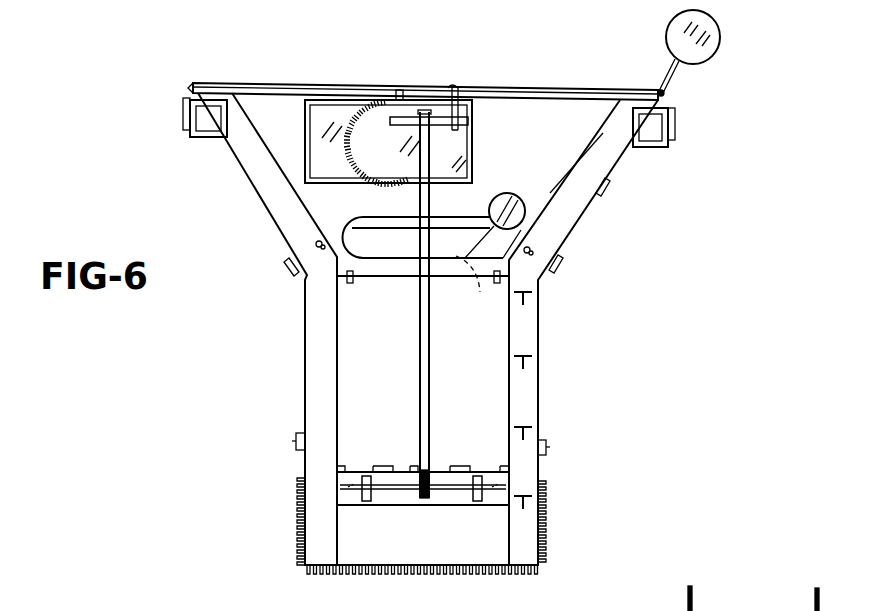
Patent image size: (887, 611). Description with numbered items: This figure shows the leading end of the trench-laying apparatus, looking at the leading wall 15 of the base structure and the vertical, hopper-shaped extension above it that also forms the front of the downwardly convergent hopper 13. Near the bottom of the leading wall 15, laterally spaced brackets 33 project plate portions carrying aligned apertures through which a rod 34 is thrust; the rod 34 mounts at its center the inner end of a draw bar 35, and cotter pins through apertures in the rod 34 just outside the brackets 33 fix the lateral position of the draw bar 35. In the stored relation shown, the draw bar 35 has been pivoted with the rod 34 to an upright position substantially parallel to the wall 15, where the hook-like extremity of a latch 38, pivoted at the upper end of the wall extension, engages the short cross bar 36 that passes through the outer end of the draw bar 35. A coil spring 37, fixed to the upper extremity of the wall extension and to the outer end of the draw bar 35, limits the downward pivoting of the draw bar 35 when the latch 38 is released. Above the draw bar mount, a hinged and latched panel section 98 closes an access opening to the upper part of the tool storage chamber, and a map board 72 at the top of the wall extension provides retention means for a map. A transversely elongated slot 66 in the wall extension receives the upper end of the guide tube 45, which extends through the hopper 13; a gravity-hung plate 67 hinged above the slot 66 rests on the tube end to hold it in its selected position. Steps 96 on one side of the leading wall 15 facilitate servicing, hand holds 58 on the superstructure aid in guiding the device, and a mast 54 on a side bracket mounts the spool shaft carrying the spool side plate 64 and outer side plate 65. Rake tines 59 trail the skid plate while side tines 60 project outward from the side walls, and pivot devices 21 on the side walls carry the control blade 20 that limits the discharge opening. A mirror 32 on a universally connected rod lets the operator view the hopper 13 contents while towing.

The hopper 13 is at (549, 86).
The leading wall 15 is at (436, 522).
The control blade 20 is at (303, 456).
The pivot devices 21 is at (294, 441).
The mirror 32 is at (720, 55).
The brackets 33 is at (483, 500).
The rod 34 is at (396, 494).
The draw bar 35 is at (420, 328).
The cross bar 36 is at (405, 117).
The coil spring 37 is at (368, 120).
The latch 38 is at (456, 115).
The guide tube 45 is at (497, 198).
The mast 54 is at (183, 128).
The hand holds 58 is at (292, 270).
The tines 59 is at (430, 576).
The tines 60 is at (297, 518).
The spool side plate 64 is at (687, 607).
The outer side plate 65 is at (820, 604).
The slot 66 is at (462, 282).
The plate 67 is at (380, 216).
The map board 72 is at (345, 120).
The steps 96 is at (532, 363).
The panel section 98 is at (376, 405).